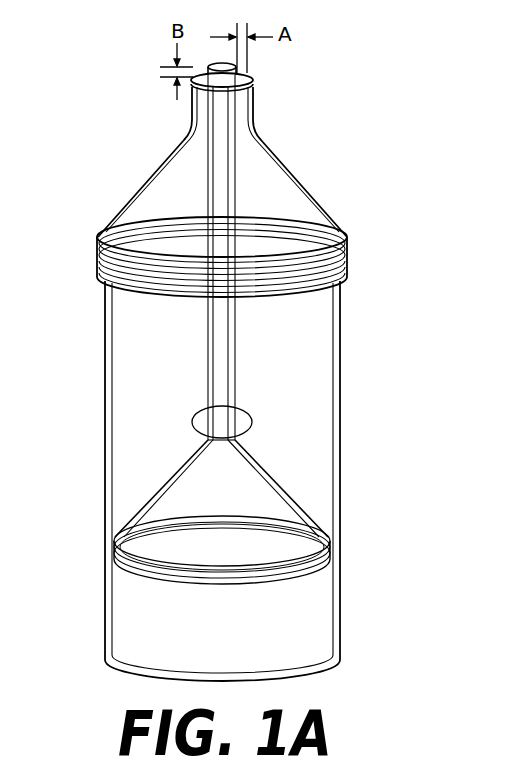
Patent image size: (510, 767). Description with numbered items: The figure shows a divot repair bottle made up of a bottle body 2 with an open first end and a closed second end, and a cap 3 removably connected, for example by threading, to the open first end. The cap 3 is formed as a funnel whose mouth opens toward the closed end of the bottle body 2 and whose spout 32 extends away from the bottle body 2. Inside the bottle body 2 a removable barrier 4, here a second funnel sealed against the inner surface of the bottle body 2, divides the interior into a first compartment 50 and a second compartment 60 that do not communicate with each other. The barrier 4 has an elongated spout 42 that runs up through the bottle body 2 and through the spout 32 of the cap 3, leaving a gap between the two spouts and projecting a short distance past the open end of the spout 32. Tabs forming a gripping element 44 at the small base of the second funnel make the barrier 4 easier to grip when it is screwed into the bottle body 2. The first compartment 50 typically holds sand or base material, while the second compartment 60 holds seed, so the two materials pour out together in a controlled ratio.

The bottle body 2 is at (335, 447).
The cap 3 is at (287, 168).
The removable barrier 4 is at (255, 361).
The spout 32 is at (192, 110).
The elongated spout 42 is at (233, 207).
The gripping element 44 is at (190, 423).
The first compartment 50 is at (117, 331).
The second compartment 60 is at (118, 603).